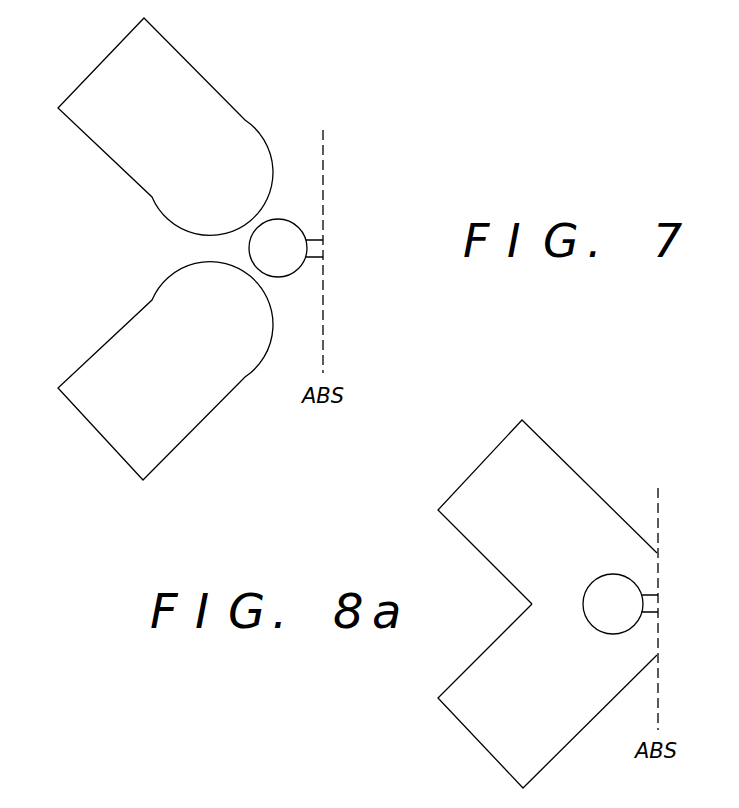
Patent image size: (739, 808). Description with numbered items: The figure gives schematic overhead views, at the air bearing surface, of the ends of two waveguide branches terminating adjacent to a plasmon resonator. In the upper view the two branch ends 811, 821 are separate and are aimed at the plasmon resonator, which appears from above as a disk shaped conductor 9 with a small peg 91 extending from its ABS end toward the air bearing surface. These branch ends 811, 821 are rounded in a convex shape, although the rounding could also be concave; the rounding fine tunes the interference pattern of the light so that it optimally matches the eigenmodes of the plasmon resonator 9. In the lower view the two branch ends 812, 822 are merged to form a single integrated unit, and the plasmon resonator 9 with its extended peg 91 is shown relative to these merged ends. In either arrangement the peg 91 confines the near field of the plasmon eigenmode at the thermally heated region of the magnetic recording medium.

In FIG. 7, the end of waveguide branch 811 is at (108, 83).
In FIG. 7, the end of waveguide branch 821 is at (108, 413).
In FIG. 8a, the end of waveguide branch 812 is at (482, 485).
In FIG. 8a, the end of waveguide branch 822 is at (487, 725).
In FIG. 7, the plasmon resonator 9 is at (283, 243).
In FIG. 8a, the plasmon resonator 9 is at (618, 598).
In FIG. 7, the peg 91 is at (312, 247).
In FIG. 8a, the peg 91 is at (645, 603).